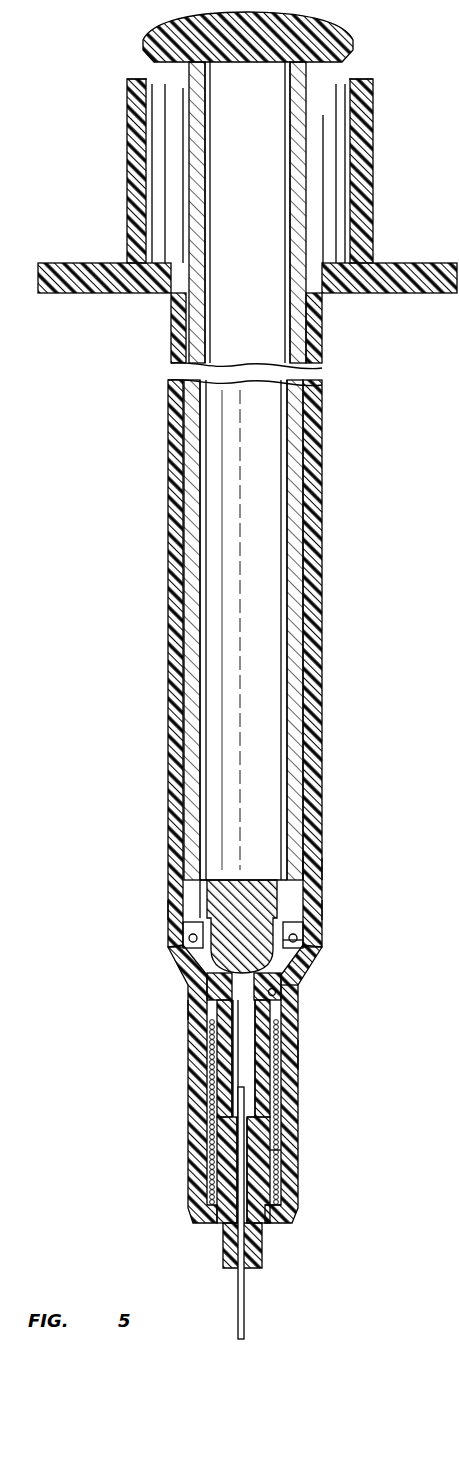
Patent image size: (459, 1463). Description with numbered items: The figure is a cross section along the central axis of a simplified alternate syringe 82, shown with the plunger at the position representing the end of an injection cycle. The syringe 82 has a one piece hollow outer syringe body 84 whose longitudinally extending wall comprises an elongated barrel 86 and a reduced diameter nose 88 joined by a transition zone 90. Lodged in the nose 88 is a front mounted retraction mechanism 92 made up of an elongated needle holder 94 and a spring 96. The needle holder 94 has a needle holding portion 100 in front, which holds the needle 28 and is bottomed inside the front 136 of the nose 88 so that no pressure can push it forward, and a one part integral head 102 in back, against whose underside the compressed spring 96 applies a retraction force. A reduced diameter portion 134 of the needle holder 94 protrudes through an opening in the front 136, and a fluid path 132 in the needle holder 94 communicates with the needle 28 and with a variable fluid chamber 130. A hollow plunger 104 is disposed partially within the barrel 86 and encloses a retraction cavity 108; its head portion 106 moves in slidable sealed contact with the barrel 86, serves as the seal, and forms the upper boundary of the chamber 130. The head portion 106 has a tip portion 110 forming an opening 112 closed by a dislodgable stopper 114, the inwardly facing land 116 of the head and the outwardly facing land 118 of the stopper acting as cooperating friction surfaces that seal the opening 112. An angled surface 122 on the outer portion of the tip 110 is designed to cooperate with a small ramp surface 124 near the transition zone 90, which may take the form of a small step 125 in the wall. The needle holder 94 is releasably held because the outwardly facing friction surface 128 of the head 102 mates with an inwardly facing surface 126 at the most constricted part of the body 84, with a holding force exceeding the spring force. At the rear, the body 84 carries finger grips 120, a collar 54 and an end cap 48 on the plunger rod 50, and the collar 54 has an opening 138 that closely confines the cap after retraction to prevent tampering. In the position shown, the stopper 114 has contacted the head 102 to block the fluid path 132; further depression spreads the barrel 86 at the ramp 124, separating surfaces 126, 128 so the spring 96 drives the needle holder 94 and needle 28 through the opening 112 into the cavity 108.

The needle 28 is at (247, 1309).
The end cap 48 is at (330, 40).
The plunger rod 50 is at (198, 24).
The collar 54 is at (376, 164).
The alternate syringe 82 is at (108, 19).
The outer syringe body 84 is at (148, 378).
The barrel 86 is at (172, 478).
The nose 88 is at (192, 1112).
The transition zone 90 is at (178, 970).
The retraction mechanism 92 is at (290, 1055).
The needle holder 94 is at (274, 1152).
The spring 96 is at (278, 1127).
The needle holding portion 100 is at (212, 1138).
The head 102 is at (190, 1010).
The plunger 104 is at (310, 420).
The head portion 106 is at (326, 874).
The retraction cavity 108 is at (264, 657).
The tip portion 110 is at (305, 929).
The opening 112 is at (303, 947).
The dislodgable stopper 114 is at (246, 892).
The inwardly facing land 116 is at (316, 830).
The outwardly facing land 118 is at (196, 893).
The finger grips 120 is at (85, 263).
The angled surface 122 is at (182, 927).
The ramp surface 124 is at (166, 909).
The step 125 is at (189, 941).
The inwardly facing surface 126 is at (276, 994).
The outwardly facing friction surface 128 is at (205, 995).
The variable fluid chamber 130 is at (296, 986).
The fluid path 132 is at (244, 1042).
The reduced diameter portion 134 is at (224, 1240).
The front 136 is at (284, 1228).
The opening 138 is at (340, 88).